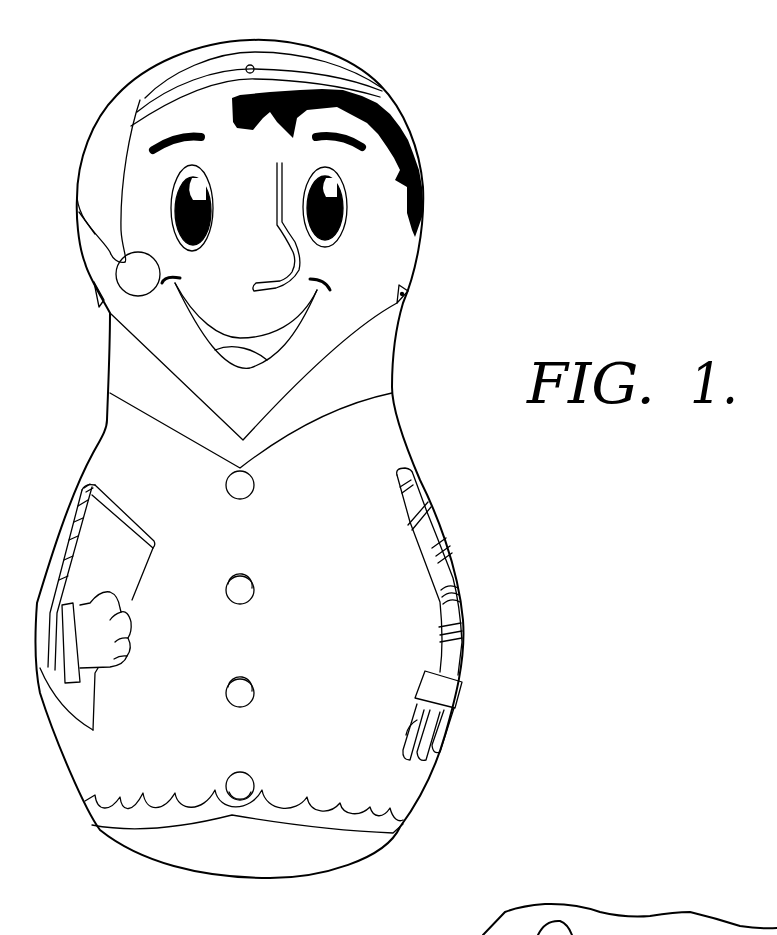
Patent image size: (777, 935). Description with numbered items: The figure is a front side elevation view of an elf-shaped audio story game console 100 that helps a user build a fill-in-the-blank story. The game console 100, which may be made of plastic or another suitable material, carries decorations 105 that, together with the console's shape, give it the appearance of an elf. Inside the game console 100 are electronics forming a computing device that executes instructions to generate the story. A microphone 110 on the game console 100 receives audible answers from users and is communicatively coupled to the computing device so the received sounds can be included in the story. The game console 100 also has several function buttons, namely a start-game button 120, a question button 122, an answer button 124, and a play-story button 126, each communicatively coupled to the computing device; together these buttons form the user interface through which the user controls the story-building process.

The game console 100 is at (402, 321).
The decorations 105 is at (377, 207).
The microphone 110 is at (253, 69).
The start-game button 120 is at (254, 487).
The question button 122 is at (254, 592).
The answer button 124 is at (254, 693).
The play-story button 126 is at (237, 800).